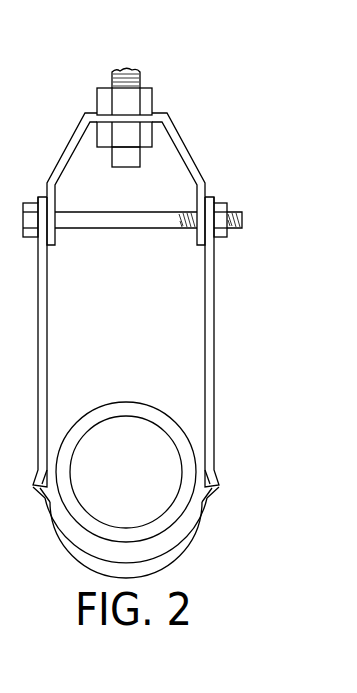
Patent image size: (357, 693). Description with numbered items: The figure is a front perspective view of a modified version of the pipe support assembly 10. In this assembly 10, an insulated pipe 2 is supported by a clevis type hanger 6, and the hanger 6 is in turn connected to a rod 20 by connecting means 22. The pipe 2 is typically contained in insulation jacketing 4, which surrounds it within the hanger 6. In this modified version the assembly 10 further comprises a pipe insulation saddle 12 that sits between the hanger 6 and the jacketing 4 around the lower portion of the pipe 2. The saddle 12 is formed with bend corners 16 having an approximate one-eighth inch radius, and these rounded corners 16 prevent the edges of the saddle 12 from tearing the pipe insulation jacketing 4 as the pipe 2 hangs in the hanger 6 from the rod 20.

The insulated pipe 2 is at (145, 495).
The insulation jacketing 4 is at (182, 427).
The clevis type hanger 6 is at (181, 143).
The assembly 10 is at (271, 284).
The pipe insulation saddle 12 is at (172, 535).
The bend corners 16 is at (216, 484).
The rod 20 is at (118, 70).
The connecting means 22 is at (152, 92).